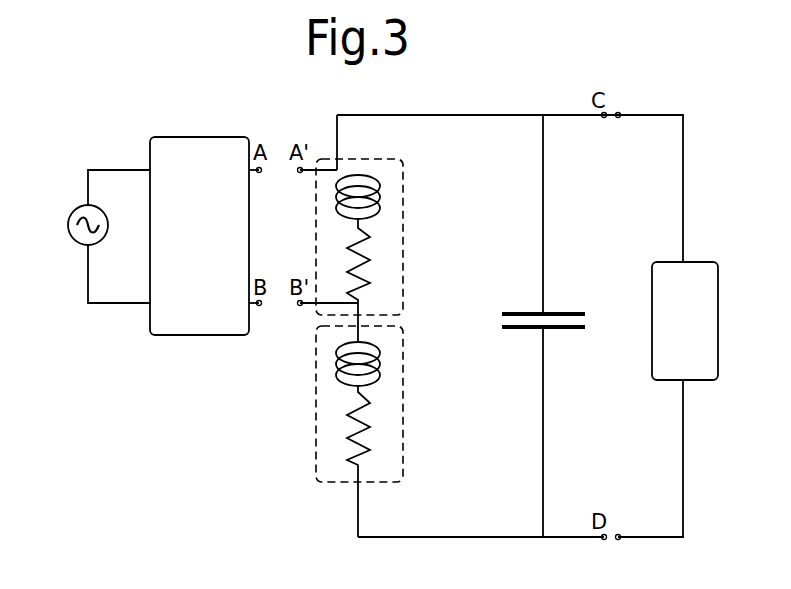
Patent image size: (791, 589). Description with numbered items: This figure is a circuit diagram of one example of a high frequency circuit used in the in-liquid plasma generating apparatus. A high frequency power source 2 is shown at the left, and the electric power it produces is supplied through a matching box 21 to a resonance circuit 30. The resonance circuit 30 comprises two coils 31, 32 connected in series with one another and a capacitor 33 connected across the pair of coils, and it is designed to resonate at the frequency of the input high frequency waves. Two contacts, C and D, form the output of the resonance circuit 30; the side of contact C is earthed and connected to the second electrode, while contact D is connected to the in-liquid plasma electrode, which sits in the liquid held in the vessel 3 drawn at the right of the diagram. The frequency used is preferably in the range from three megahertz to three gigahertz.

The high frequency power source 2 is at (93, 238).
The matching box 21 is at (214, 240).
The vessel 3 is at (692, 328).
The resonance circuit 30 is at (270, 482).
The coil 31 is at (357, 184).
The coil 32 is at (337, 351).
The capacitor 33 is at (525, 327).